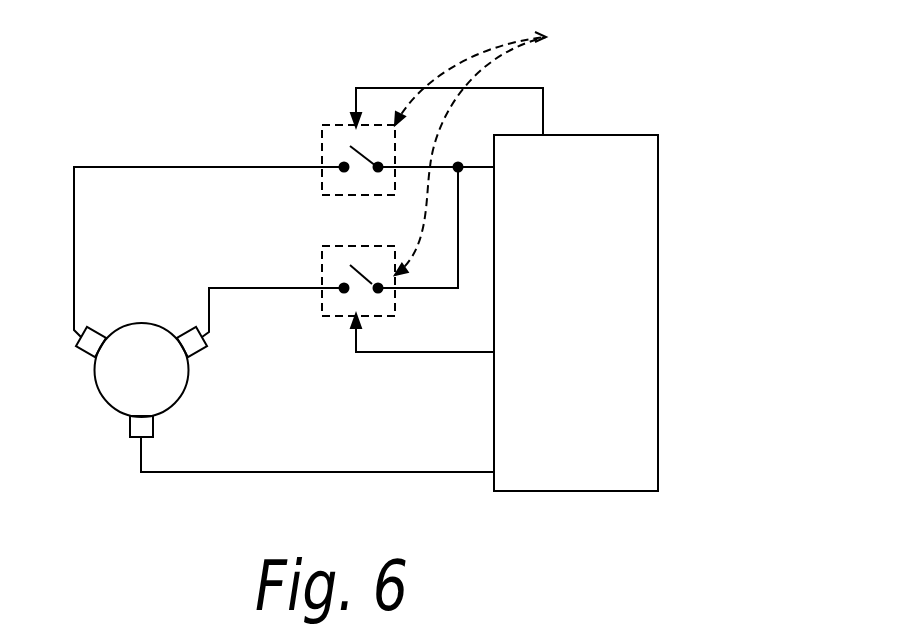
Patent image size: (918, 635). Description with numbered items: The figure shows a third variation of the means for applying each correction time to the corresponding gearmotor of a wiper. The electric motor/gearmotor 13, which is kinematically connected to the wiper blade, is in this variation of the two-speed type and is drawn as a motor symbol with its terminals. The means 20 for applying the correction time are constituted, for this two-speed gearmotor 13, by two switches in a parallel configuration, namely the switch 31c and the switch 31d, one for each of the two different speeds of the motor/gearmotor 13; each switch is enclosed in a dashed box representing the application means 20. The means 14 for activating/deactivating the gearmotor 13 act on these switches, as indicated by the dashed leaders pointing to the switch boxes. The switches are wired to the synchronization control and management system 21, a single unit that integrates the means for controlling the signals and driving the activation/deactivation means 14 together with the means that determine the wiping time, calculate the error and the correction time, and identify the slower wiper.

The electric motor/gearmotor 13 is at (102, 397).
The means for activating/deactivating the gearmotor 14 is at (496, 143).
The means for applying the correction times 20 is at (337, 125).
The synchronization control and management system 21 is at (660, 291).
The switch 31c is at (353, 146).
The switch 31d is at (362, 282).